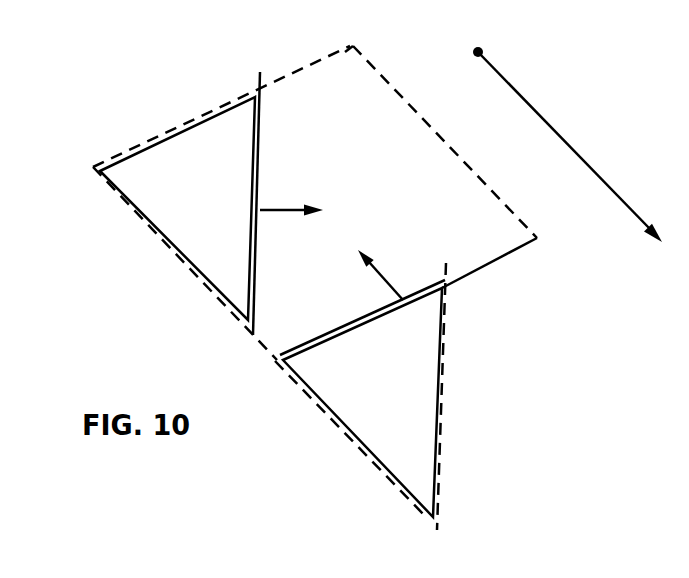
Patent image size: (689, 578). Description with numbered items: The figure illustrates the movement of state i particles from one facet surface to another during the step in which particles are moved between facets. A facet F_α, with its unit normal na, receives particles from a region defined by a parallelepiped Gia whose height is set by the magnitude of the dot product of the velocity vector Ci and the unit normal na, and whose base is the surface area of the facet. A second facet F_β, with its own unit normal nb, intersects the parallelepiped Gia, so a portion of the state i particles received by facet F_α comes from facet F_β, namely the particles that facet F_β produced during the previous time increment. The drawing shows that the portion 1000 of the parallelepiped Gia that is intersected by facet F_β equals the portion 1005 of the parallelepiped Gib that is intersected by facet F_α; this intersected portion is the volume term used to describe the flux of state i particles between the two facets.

The portion of parallelepiped G_iα intersected by facet F_β 1000 is at (140, 216).
The portion of parallelepiped G_iβ intersected by facet F_α 1005 is at (440, 402).
The parallelepiped G_iα Gia is at (377, 57).
The parallelepiped G_iβ Gib is at (360, 453).
The velocity vector c_i Ci is at (573, 150).
The unit normal n_α na is at (385, 272).
The unit normal n_β nb is at (282, 209).